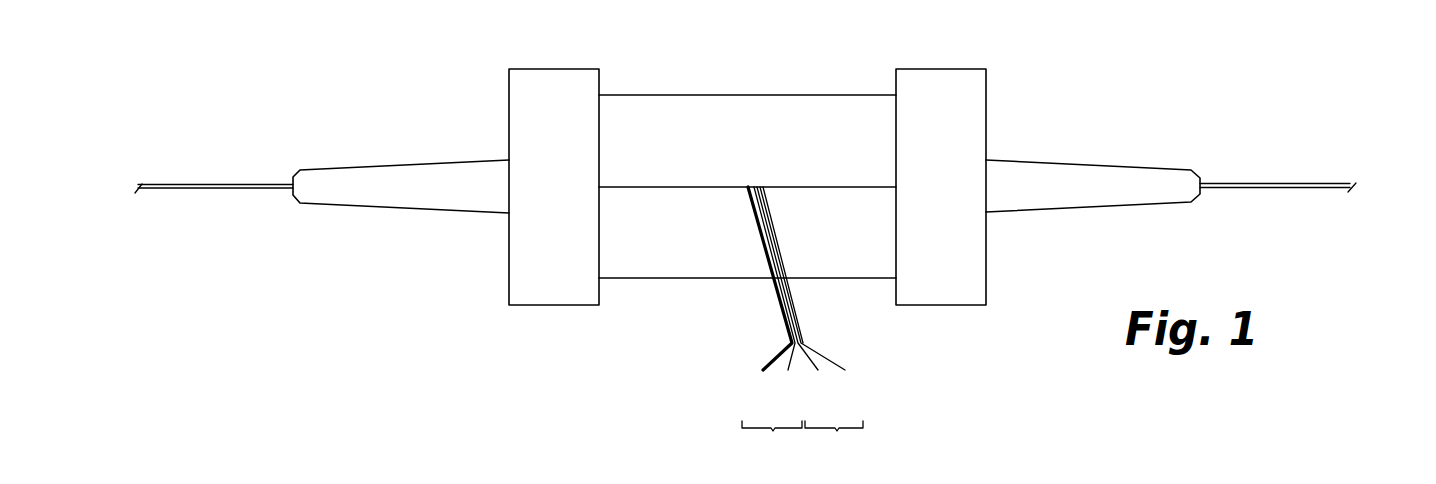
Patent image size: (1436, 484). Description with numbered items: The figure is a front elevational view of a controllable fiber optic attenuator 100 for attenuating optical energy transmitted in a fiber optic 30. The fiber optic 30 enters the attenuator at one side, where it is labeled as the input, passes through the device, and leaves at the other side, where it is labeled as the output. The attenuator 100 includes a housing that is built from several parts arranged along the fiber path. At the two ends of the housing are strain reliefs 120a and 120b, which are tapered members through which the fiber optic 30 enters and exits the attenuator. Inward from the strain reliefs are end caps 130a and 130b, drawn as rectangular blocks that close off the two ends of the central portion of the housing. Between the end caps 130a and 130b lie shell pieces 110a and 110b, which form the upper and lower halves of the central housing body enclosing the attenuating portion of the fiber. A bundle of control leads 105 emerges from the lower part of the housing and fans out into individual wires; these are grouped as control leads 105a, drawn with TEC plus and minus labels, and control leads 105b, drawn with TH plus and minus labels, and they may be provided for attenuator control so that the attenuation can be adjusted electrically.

The attenuator 100 is at (1168, 93).
The fiber optic 30 is at (1263, 185).
The electrical leads 105 is at (794, 331).
The control lead 105a is at (770, 420).
The control lead 105b is at (837, 420).
The shell piece 110a is at (665, 110).
The shell piece 110b is at (670, 310).
The strain relief 120a is at (407, 176).
The strain relief 120b is at (1071, 175).
The end cap 130a is at (550, 85).
The end cap 130b is at (939, 85).